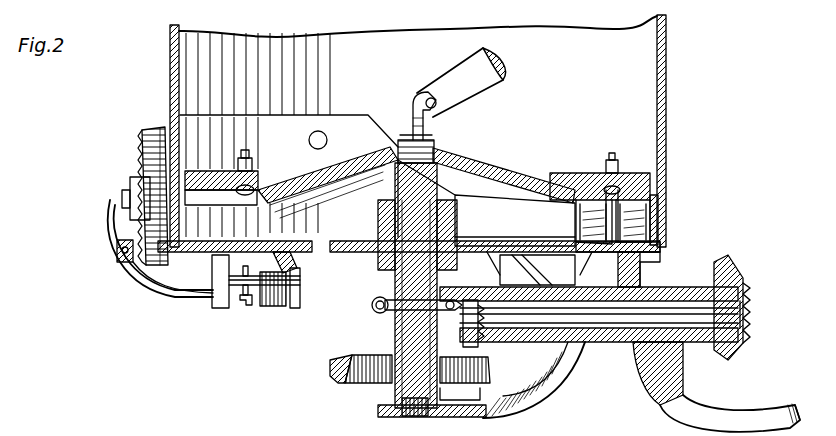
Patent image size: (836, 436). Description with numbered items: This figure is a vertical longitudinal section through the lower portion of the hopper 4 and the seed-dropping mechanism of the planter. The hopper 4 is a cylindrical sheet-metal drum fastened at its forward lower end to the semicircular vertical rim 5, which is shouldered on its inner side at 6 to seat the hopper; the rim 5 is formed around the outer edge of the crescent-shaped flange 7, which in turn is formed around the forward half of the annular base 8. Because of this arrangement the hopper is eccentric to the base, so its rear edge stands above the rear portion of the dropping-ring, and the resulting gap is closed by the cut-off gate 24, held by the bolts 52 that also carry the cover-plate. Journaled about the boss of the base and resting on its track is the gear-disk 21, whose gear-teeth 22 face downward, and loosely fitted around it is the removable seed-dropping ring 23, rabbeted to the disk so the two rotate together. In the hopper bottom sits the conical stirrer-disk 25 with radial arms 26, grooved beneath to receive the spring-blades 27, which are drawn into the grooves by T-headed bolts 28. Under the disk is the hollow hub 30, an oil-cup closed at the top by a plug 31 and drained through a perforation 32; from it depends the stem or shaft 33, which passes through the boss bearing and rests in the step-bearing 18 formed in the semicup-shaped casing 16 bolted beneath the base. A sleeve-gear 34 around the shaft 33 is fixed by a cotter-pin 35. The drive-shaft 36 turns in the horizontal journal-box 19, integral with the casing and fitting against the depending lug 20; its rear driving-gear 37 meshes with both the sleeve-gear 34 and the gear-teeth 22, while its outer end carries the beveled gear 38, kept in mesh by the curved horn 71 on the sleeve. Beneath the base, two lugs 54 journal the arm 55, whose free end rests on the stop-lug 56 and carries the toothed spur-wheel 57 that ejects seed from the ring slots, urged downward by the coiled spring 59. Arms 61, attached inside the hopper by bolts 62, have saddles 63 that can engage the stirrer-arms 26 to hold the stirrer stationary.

The hopper 4 is at (172, 118).
The semicircular vertical rim 5 is at (662, 197).
The shoulder 6 is at (660, 228).
The crescent-shaped flange 7 is at (650, 262).
The annular base 8 is at (578, 270).
The casing 16 is at (536, 395).
The step-bearing 18 is at (440, 400).
The journal-box 19 is at (600, 330).
The depending lug 20 is at (640, 278).
The gear-disk 21 is at (512, 240).
The gear-teeth 22 is at (258, 305).
The seed-dropping ring 23 is at (539, 268).
The cut-off gate 24 is at (153, 196).
The conical stirrer-disk 25 is at (520, 182).
The radial arms 26 is at (600, 180).
The spring-blades 27 is at (676, 158).
The bolts 28 is at (245, 158).
The hollow hub 30 is at (455, 192).
The plug 31 is at (434, 148).
The perforation 32 is at (416, 285).
The stem or shaft 33 is at (398, 392).
The sleeve-gear 34 is at (340, 376).
The cotter-pin 35 is at (378, 312).
The drive-shaft 36 is at (648, 320).
The driving-gear 37 is at (492, 365).
The beveled gear 38 is at (736, 276).
The bolts 52 is at (327, 140).
The lugs 54 is at (222, 308).
The arm 55 is at (180, 289).
The stop-lug 56 is at (118, 250).
The spur-wheel 57 is at (132, 178).
The coiled spring 59 is at (273, 306).
The arms 61 is at (460, 82).
The bolts 62 is at (418, 98).
The saddles 63 is at (499, 61).
The horn 71 is at (748, 414).